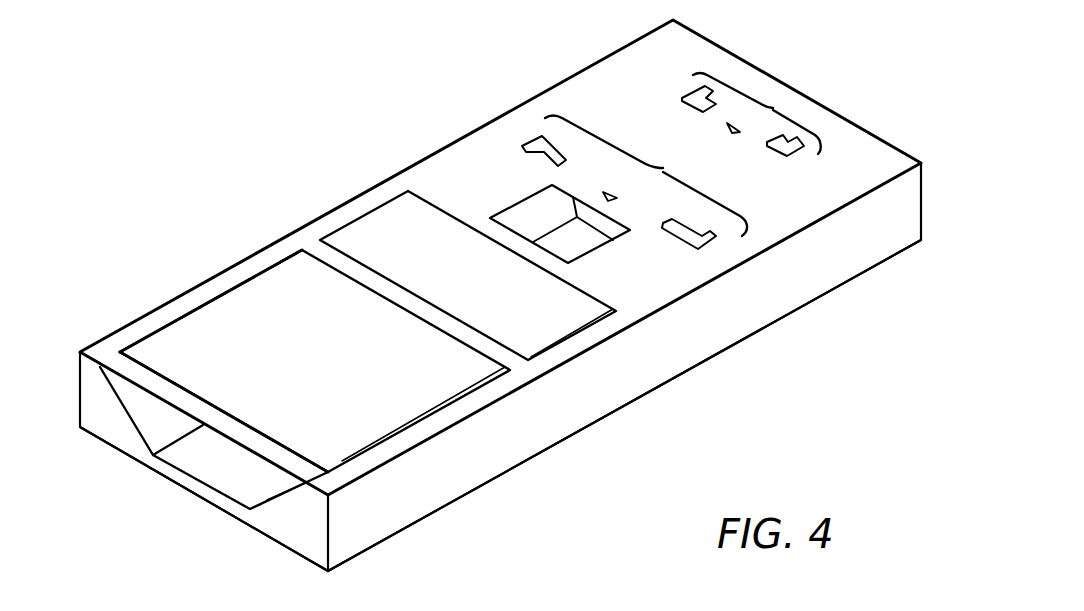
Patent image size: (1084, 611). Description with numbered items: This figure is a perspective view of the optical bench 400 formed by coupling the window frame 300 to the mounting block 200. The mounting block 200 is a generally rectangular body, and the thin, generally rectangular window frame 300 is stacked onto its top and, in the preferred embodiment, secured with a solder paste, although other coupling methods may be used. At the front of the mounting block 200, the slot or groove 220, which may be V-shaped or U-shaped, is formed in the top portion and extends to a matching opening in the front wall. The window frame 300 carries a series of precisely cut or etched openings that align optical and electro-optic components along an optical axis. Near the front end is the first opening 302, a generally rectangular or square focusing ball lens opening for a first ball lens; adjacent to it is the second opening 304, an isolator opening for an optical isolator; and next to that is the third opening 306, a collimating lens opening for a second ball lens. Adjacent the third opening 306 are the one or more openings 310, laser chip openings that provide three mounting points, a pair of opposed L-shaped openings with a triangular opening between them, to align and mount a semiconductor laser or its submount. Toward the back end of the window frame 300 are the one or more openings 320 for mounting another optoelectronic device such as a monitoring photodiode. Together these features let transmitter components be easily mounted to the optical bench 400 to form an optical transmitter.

The mounting block 200 is at (723, 325).
The slot or groove 220 is at (225, 473).
The window frame 300 is at (442, 180).
The first opening 302 is at (292, 318).
The second opening 304 is at (400, 235).
The third opening 306 is at (546, 190).
The one or more openings 310 is at (663, 168).
The one or more openings 320 is at (773, 108).
The optical bench 400 is at (590, 497).